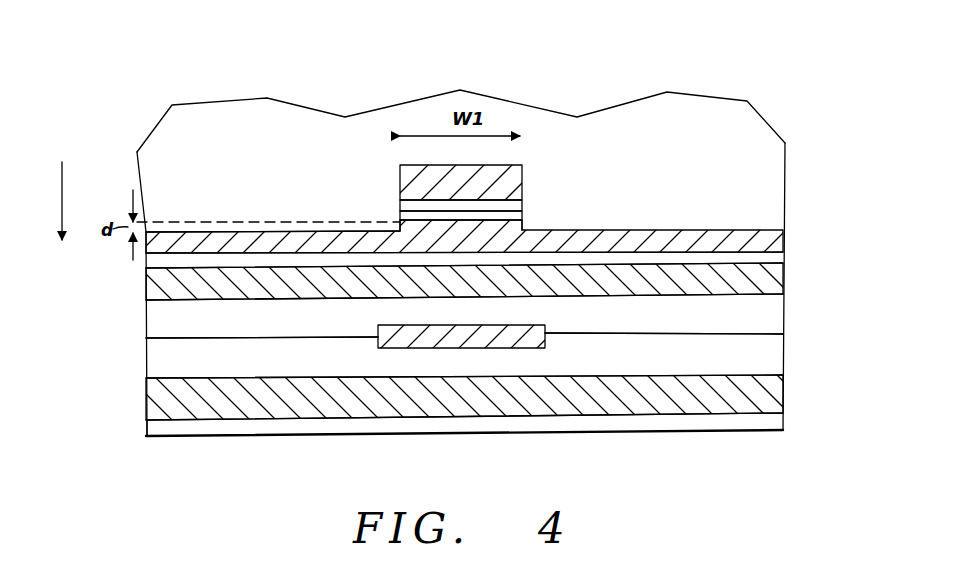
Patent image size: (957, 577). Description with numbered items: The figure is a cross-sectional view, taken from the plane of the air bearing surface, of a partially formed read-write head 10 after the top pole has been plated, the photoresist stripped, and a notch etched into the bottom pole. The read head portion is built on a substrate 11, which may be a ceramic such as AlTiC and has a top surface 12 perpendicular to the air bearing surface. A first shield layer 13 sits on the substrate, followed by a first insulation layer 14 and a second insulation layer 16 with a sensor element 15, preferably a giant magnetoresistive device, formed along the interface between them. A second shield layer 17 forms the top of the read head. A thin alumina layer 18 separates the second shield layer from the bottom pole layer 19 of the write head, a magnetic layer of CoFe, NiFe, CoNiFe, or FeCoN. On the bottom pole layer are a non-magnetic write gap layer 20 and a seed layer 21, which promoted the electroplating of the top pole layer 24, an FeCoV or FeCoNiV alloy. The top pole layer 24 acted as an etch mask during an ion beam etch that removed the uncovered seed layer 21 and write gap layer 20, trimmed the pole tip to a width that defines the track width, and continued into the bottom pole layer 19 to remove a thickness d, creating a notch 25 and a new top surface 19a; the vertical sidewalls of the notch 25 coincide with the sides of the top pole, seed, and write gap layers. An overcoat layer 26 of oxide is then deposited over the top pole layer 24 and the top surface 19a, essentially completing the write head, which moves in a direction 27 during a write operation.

The read-write head 10 is at (147, 108).
The substrate 11 is at (770, 422).
The top surface 12 is at (147, 420).
The first shield layer 13 is at (768, 395).
The first insulation layer 14 is at (768, 353).
The sensor element 15 is at (463, 337).
The second insulation layer 16 is at (762, 312).
The second shield layer 17 is at (767, 275).
The thin Al2O3 layer 18 is at (772, 254).
The bottom pole layer 19 is at (773, 238).
The top surface 19a is at (240, 232).
The write gap layer 20 is at (518, 213).
The seed layer 21 is at (412, 206).
The top pole layer 24 is at (512, 183).
The notch 25 is at (523, 230).
The overcoat layer 26 is at (160, 160).
The direction 27 is at (63, 190).